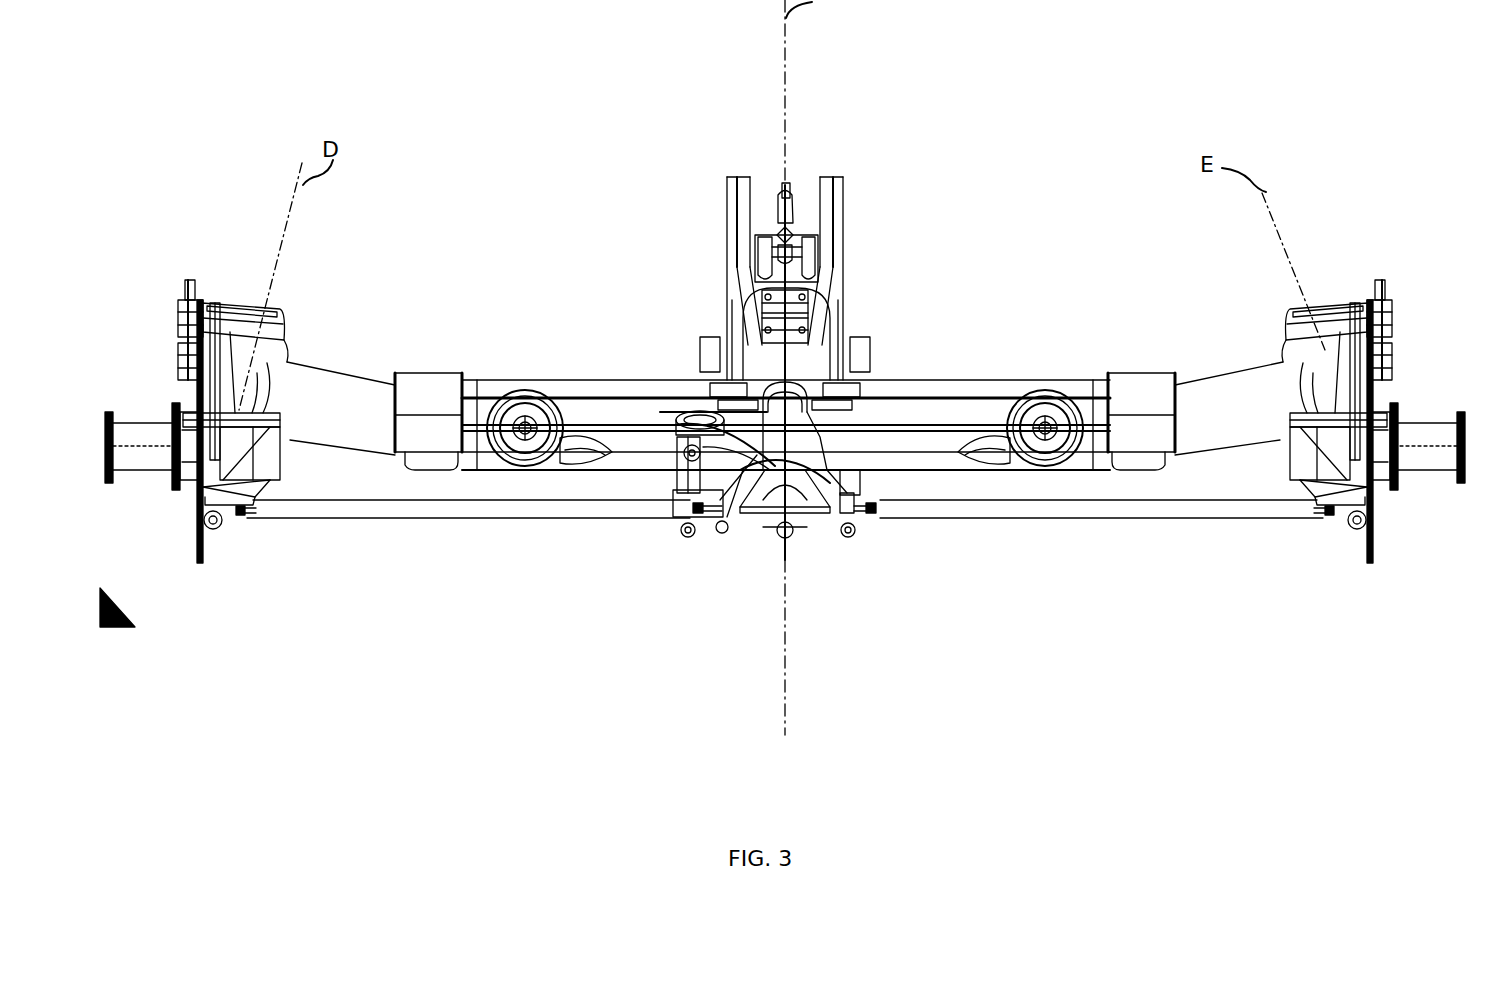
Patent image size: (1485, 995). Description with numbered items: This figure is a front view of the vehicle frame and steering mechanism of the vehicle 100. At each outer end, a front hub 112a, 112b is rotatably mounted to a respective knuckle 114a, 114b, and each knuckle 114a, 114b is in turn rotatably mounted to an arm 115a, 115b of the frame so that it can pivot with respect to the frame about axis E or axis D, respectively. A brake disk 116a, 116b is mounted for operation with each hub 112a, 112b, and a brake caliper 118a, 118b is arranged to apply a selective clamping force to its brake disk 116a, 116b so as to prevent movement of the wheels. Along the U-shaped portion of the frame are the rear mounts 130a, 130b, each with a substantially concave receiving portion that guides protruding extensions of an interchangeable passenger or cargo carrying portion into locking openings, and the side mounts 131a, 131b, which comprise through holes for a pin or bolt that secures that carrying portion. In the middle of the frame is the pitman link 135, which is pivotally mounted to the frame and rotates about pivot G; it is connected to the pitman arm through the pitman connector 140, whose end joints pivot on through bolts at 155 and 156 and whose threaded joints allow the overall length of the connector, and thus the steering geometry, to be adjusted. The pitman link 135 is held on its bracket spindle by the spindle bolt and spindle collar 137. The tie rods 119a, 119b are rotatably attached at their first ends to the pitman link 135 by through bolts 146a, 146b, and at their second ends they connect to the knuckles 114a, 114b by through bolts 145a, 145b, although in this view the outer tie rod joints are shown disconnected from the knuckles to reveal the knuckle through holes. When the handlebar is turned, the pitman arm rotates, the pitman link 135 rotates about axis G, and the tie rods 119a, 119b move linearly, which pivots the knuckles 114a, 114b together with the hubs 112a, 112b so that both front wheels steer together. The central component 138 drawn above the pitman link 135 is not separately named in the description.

The vehicle 100 is at (1094, 772).
The hub 112a is at (1433, 423).
The hub 112b is at (140, 423).
The knuckle 114a is at (1315, 492).
The knuckle 114b is at (255, 492).
The arm 115a is at (1290, 358).
The arm 115b is at (288, 360).
The brake disk 116a is at (1378, 545).
The brake disk 116b is at (197, 548).
The brake caliper 118a is at (1370, 332).
The brake caliper 118b is at (185, 278).
The tie rod 119a is at (1130, 512).
The tie rod 119b is at (448, 508).
The rear mount 130a is at (1045, 428).
The rear mount 130b is at (525, 428).
The side mount 131a is at (1113, 427).
The side mount 131b is at (467, 438).
The pitman link 135 is at (773, 433).
The spindle bolt and spindle collar 137 is at (790, 468).
The pinion flange assembly 138 is at (783, 385).
The pitman connector 140 is at (693, 473).
The through bolt 145a is at (1350, 520).
The through bolt 145b is at (225, 515).
The through bolt 146a is at (850, 507).
The through bolt 146b is at (726, 522).
The through bolt 155 is at (690, 536).
The through bolt 156 is at (690, 417).